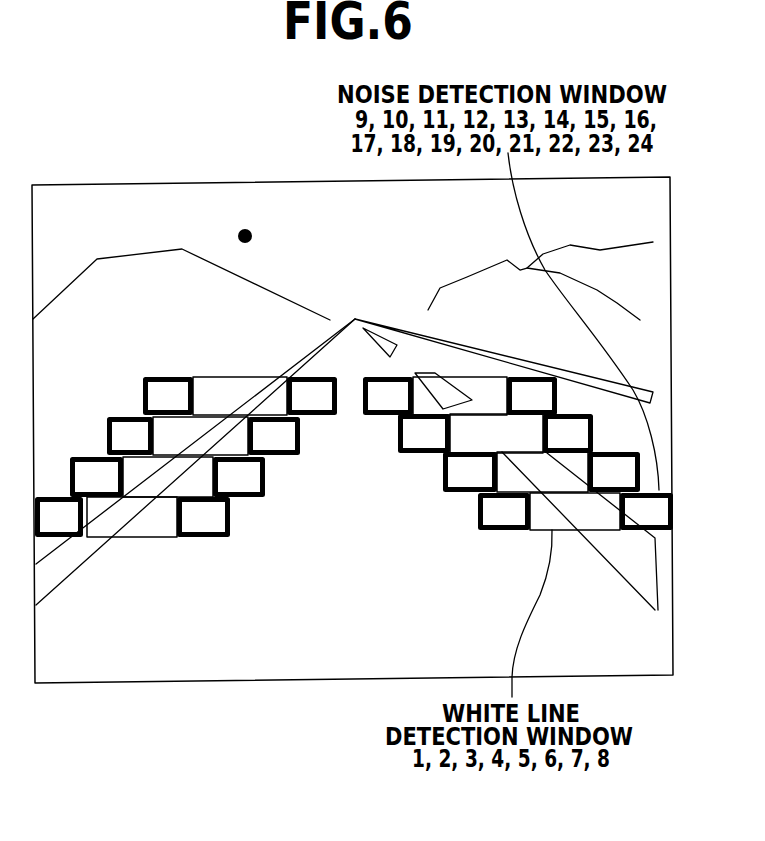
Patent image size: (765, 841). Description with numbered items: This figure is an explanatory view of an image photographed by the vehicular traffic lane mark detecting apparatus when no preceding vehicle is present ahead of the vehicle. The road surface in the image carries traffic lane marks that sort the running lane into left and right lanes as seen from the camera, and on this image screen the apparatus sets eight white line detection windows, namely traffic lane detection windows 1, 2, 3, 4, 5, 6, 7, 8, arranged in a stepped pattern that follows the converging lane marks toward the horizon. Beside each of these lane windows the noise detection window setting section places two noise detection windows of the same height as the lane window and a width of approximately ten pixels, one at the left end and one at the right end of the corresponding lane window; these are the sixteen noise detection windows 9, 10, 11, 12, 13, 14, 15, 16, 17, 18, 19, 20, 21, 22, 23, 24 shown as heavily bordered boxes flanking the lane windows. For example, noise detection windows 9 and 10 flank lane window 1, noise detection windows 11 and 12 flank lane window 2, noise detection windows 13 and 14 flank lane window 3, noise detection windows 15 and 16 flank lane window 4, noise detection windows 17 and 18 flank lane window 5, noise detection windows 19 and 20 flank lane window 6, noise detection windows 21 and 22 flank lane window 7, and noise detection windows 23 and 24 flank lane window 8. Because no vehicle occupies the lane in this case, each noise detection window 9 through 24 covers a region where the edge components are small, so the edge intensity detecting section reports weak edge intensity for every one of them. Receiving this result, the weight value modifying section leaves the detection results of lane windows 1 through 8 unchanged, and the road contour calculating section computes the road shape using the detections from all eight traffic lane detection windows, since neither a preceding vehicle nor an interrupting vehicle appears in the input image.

The traffic lane detection window 1 is at (132, 517).
The traffic lane detection window 2 is at (575, 511).
The traffic lane detection window 3 is at (168, 476).
The traffic lane detection window 4 is at (542, 470).
The traffic lane detection window 5 is at (200, 436).
The traffic lane detection window 6 is at (496, 433).
The traffic lane detection window 7 is at (240, 396).
The traffic lane detection window 8 is at (460, 396).
The noise detection window 9 is at (59, 517).
The noise detection window 10 is at (204, 517).
The noise detection window 11 is at (504, 512).
The noise detection window 12 is at (647, 512).
The noise detection window 13 is at (97, 477).
The noise detection window 14 is at (239, 477).
The noise detection window 15 is at (470, 472).
The noise detection window 16 is at (614, 472).
The noise detection window 17 is at (130, 436).
The noise detection window 18 is at (274, 436).
The noise detection window 19 is at (424, 434).
The noise detection window 20 is at (568, 434).
The noise detection window 21 is at (168, 397).
The noise detection window 22 is at (312, 397).
The noise detection window 23 is at (388, 396).
The noise detection window 24 is at (532, 396).